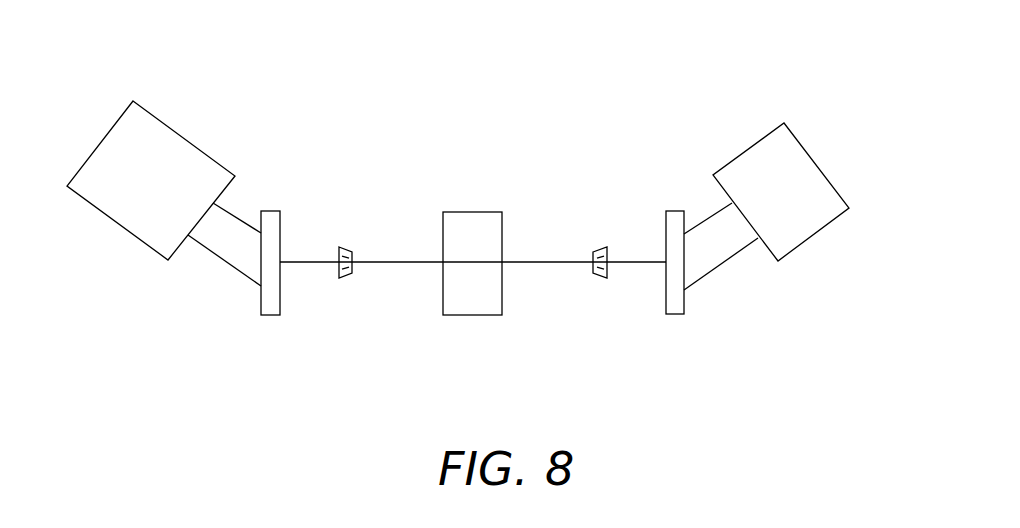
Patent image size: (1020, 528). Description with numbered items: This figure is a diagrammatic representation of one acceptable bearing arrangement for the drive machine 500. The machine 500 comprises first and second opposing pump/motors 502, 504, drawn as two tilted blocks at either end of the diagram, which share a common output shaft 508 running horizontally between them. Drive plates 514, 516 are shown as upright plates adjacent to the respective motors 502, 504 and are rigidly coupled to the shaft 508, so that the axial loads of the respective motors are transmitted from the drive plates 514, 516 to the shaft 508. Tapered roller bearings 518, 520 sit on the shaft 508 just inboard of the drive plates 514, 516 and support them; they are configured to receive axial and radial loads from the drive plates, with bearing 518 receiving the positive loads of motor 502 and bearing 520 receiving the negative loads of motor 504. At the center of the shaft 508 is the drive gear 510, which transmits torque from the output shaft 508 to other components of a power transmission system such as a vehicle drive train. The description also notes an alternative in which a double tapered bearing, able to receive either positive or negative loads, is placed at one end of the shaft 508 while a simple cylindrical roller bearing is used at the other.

The drive machine 500 is at (386, 112).
The first pump/motor 502 is at (100, 140).
The second pump/motor 504 is at (815, 162).
The common output shaft 508 is at (543, 262).
The drive gear 510 is at (477, 212).
The first drive plate 514 is at (270, 315).
The second drive plate 516 is at (673, 314).
The first tapered roller bearing 518 is at (347, 247).
The second tapered roller bearing 520 is at (600, 247).